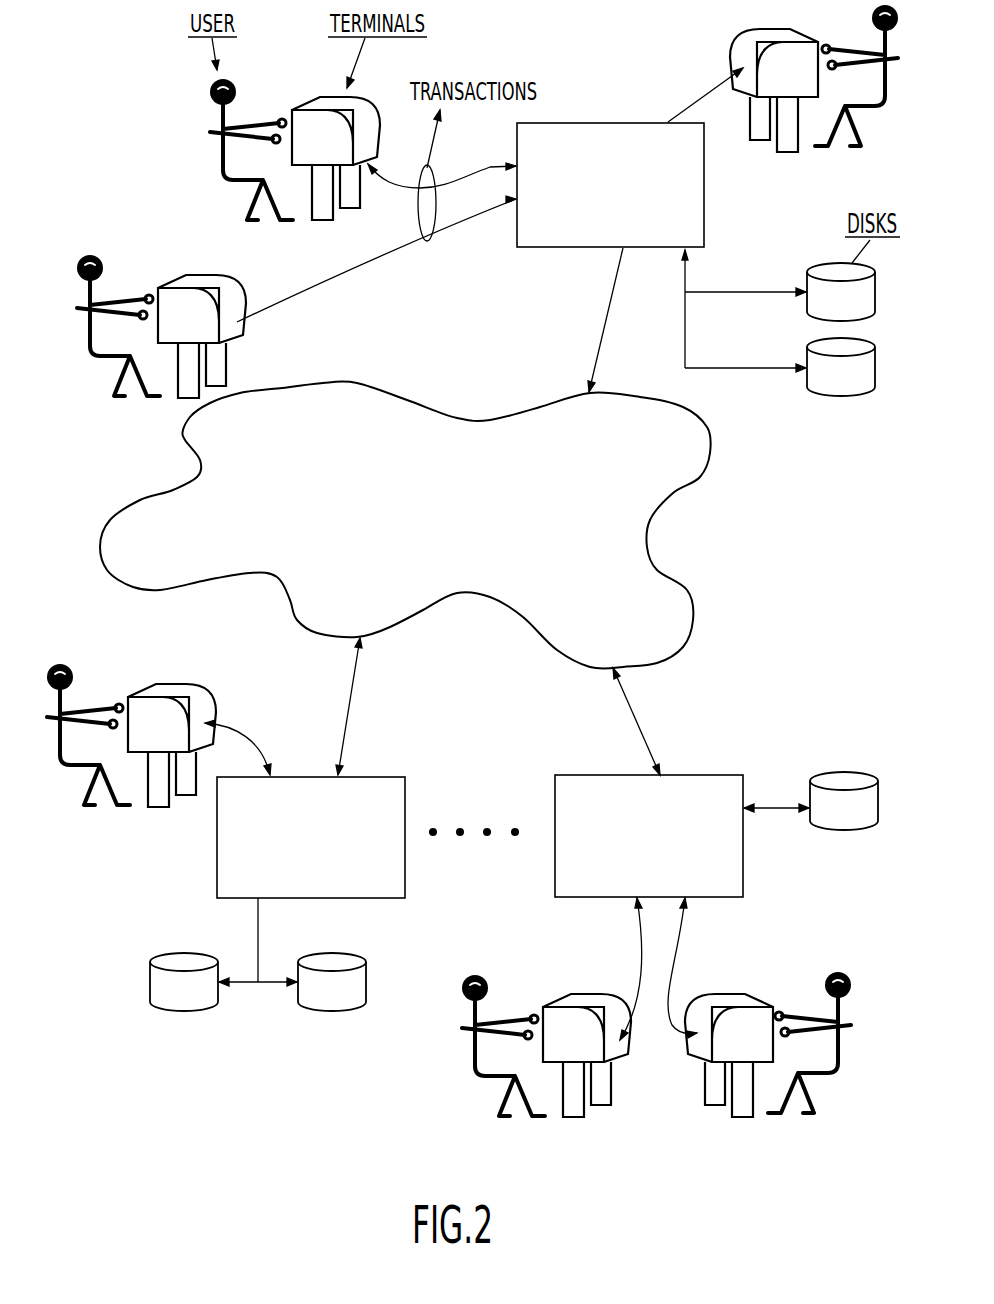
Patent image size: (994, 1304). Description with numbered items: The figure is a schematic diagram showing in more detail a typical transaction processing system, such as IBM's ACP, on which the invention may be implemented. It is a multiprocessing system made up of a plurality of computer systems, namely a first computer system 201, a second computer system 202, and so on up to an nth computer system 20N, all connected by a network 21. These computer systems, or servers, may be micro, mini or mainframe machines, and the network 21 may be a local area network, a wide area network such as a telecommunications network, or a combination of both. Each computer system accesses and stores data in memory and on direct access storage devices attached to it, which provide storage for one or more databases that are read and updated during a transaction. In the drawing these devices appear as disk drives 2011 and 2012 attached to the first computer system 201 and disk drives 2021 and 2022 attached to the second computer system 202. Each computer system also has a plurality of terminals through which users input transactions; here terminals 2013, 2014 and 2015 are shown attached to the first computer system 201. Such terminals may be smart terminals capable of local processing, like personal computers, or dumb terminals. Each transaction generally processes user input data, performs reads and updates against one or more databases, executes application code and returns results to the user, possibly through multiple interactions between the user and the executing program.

The terminal 2014 is at (362, 98).
The terminal 2015 is at (745, 40).
The terminal 2013 is at (242, 337).
The computer system 201 is at (705, 192).
The disk drive 2011 is at (813, 303).
The disk drive 2012 is at (820, 385).
The network 21 is at (173, 487).
The computer system 202 is at (395, 777).
The disk drive 2021 is at (182, 962).
The disk drive 2022 is at (335, 1005).
The computer system 20N is at (605, 775).